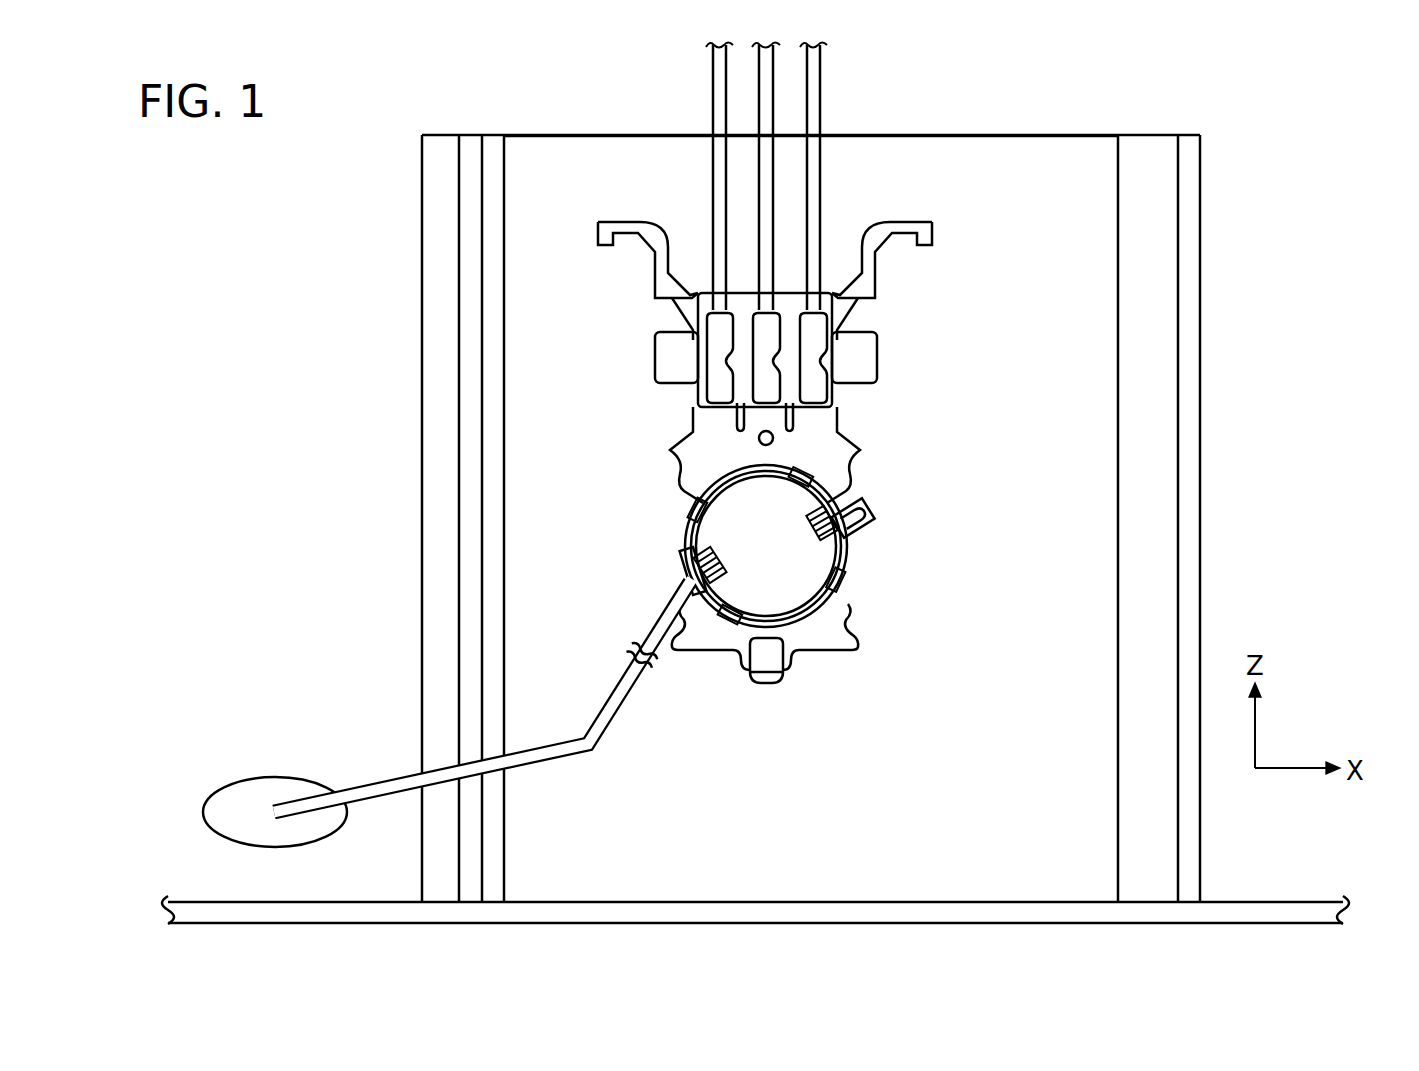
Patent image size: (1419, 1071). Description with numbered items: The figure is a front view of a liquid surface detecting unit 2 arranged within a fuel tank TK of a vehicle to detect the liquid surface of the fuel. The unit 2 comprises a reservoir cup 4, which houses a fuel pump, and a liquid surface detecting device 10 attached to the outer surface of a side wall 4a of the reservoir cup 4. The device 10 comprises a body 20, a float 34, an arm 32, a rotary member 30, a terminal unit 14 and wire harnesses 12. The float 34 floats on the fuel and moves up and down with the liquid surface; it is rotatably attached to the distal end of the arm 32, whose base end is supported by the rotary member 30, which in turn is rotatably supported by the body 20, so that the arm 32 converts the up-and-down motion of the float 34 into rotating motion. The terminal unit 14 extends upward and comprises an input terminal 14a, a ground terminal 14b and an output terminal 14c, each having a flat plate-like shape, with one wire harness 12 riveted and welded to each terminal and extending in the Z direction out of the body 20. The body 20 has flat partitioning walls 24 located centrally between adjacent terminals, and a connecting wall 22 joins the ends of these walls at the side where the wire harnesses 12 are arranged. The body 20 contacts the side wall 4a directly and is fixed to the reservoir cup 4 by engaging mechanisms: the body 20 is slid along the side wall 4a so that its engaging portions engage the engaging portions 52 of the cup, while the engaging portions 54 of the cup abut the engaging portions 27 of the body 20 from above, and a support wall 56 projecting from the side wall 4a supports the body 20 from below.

The liquid surface detecting unit 2 is at (846, 469).
The reservoir cup 4 is at (811, 471).
The side wall 4a is at (1060, 148).
The liquid surface detecting device 10 is at (790, 405).
The wire harnesses 12 is at (813, 62).
The terminal unit 14 is at (866, 392).
The input terminal 14a is at (720, 392).
The ground terminal 14b is at (765, 381).
The output terminal 14c is at (813, 337).
The body 20 is at (840, 470).
The connecting wall 22 is at (788, 297).
The partitioning walls 24 is at (780, 420).
The engaging portions 27 is at (687, 307).
The rotary member 30 is at (820, 578).
The arm 32 is at (613, 703).
The float 34 is at (225, 797).
The engaging portions 52 is at (607, 230).
The engaging portions 54 is at (873, 345).
The support wall 56 is at (775, 686).
The fuel tank TK is at (1263, 912).